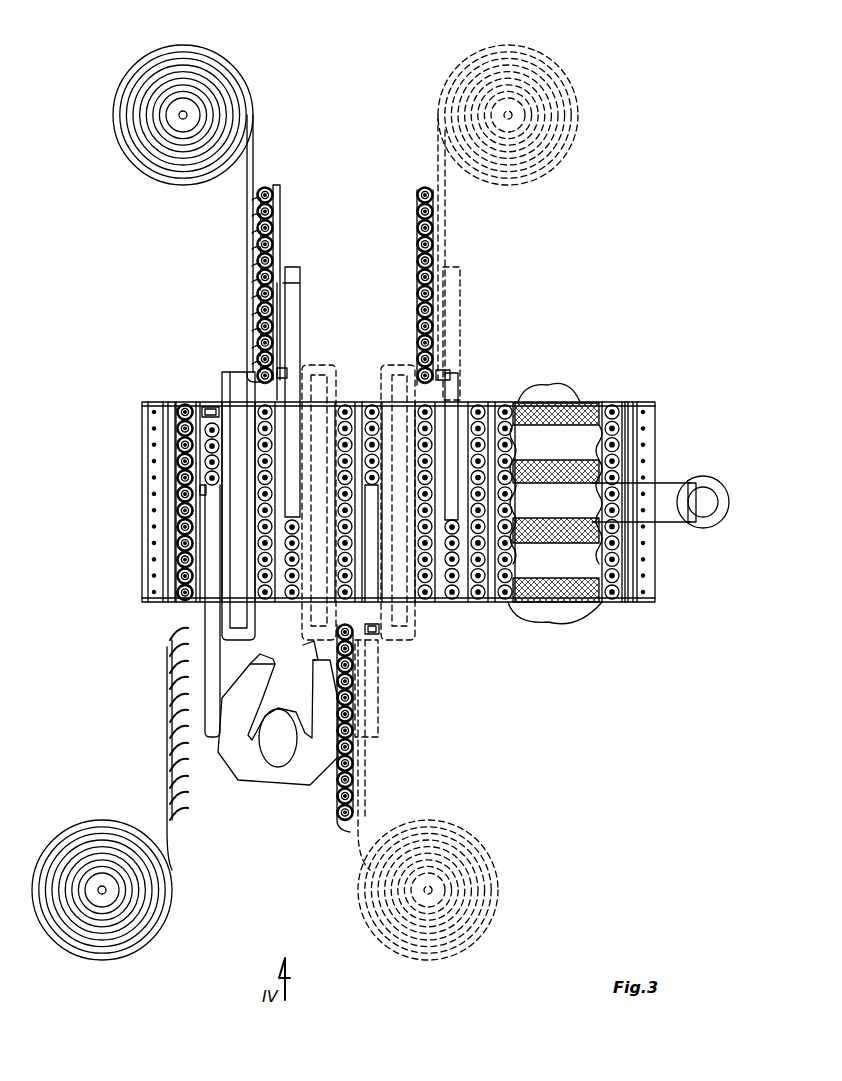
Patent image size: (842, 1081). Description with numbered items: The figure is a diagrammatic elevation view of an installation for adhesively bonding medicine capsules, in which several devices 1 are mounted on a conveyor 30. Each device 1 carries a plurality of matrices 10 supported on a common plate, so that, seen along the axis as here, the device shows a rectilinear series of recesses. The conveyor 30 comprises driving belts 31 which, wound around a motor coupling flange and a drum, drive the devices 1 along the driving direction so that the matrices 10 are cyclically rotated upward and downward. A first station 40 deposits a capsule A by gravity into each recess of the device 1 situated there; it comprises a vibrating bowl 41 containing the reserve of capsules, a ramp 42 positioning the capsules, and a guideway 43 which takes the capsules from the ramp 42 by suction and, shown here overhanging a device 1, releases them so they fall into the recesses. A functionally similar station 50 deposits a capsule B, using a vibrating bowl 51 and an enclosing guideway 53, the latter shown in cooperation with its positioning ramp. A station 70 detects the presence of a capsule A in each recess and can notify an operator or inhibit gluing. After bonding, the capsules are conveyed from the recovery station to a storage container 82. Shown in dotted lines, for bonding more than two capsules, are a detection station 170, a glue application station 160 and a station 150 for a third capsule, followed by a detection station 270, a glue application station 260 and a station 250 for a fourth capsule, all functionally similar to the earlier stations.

The device 1 is at (258, 468).
The matrix 10 is at (478, 600).
The conveyor 30 is at (137, 414).
The driving belt 31 is at (590, 605).
The first station 40 is at (97, 811).
The vibrating bowl 41 is at (93, 945).
The ramp 42 is at (168, 728).
The guideway 43 is at (185, 600).
The station 50 is at (210, 199).
The vibrating bowl 51 is at (212, 68).
The enclosing guideway 53 is at (276, 200).
The station 70 is at (205, 398).
The storage container 82 is at (700, 476).
The station for depositing a third capsule 150 is at (392, 722).
The glue application station 160 is at (322, 364).
The detection station 170 is at (291, 364).
The station for depositing a fourth capsule 250 is at (462, 291).
The glue application station 260 is at (386, 364).
The detection station 270 is at (382, 636).